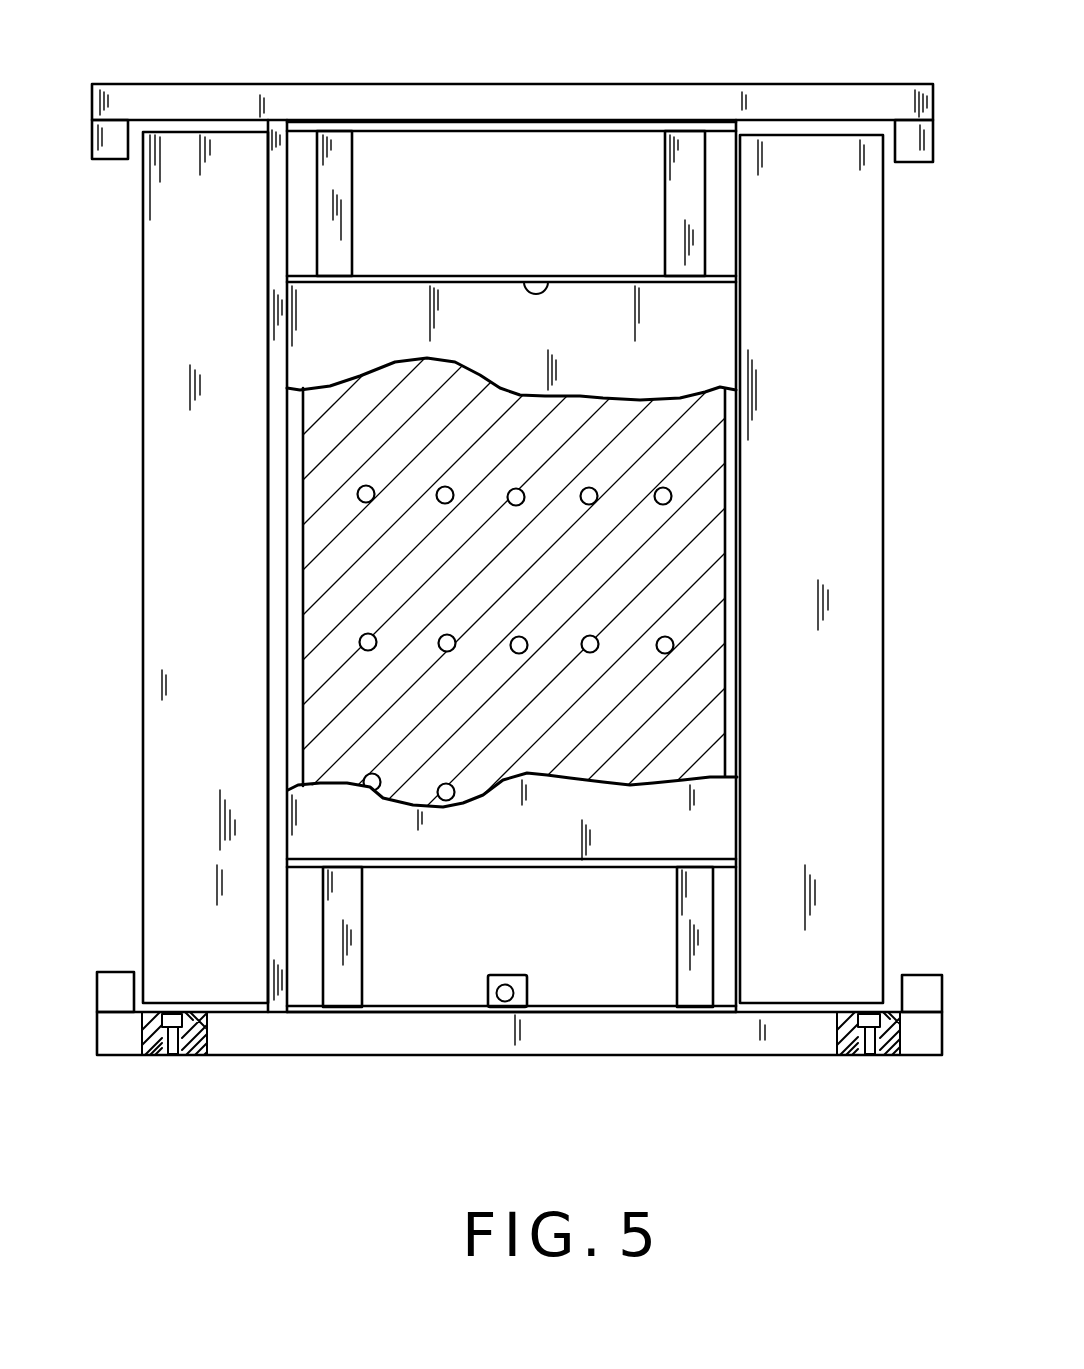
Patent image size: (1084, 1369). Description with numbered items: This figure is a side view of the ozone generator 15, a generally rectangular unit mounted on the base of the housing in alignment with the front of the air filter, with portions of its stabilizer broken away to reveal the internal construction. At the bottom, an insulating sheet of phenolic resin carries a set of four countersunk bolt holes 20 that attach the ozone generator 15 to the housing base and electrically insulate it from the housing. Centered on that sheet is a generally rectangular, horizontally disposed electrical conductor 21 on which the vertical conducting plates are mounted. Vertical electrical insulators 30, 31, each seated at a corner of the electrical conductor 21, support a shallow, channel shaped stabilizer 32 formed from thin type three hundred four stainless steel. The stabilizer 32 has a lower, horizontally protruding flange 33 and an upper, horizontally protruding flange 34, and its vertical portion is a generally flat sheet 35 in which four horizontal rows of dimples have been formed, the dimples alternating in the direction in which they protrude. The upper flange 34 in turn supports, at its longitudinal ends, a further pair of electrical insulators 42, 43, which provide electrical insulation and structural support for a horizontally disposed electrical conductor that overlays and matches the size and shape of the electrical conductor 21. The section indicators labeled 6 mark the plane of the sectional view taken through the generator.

The section line 6- 6 is at (284, 0).
The ozone generator 15 is at (222, 485).
The countersunk bolt holes 20 is at (170, 1040).
The electrical conductor 21 is at (413, 1013).
The electrical insulator 30 is at (343, 941).
The electrical insulator 31 is at (695, 935).
The stabilizer 32 is at (688, 742).
The lower flange 33 is at (483, 865).
The upper flange 34 is at (556, 276).
The flat sheet 35 is at (695, 336).
The electrical insulator 42 is at (333, 196).
The electrical insulator 43 is at (692, 208).